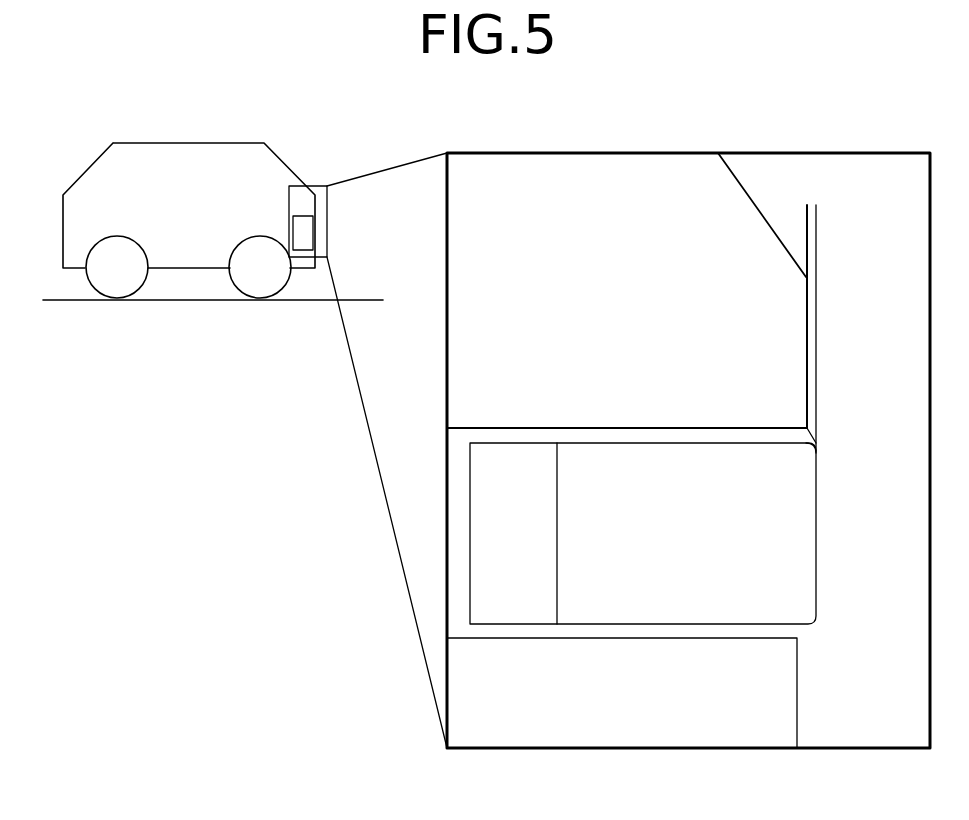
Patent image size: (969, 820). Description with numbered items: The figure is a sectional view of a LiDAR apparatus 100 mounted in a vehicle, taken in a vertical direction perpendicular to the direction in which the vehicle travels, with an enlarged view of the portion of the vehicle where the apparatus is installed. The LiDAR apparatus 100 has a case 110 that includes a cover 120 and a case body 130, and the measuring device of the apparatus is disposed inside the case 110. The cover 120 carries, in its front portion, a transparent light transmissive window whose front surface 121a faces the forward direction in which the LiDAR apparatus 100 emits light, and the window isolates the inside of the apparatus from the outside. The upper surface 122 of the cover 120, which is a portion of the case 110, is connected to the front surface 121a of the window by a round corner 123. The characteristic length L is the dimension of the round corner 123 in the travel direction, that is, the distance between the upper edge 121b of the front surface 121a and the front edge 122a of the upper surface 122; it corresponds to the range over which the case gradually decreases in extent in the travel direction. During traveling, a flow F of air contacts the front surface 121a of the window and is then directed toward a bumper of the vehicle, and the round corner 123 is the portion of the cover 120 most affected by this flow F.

The LiDAR apparatus 100 is at (306, 210).
The case 110 is at (458, 481).
The cover 120 is at (782, 602).
The front surface of the light transmissive window 121a is at (817, 553).
The upper edge of the front surface 121b is at (815, 447).
The upper surface of the cover 122 is at (742, 440).
The front edge of the upper surface 122a is at (808, 427).
The round corner 123 is at (815, 437).
The case body 130 is at (502, 567).
The characteristic length L is at (840, 228).
The flow of air F is at (836, 429).